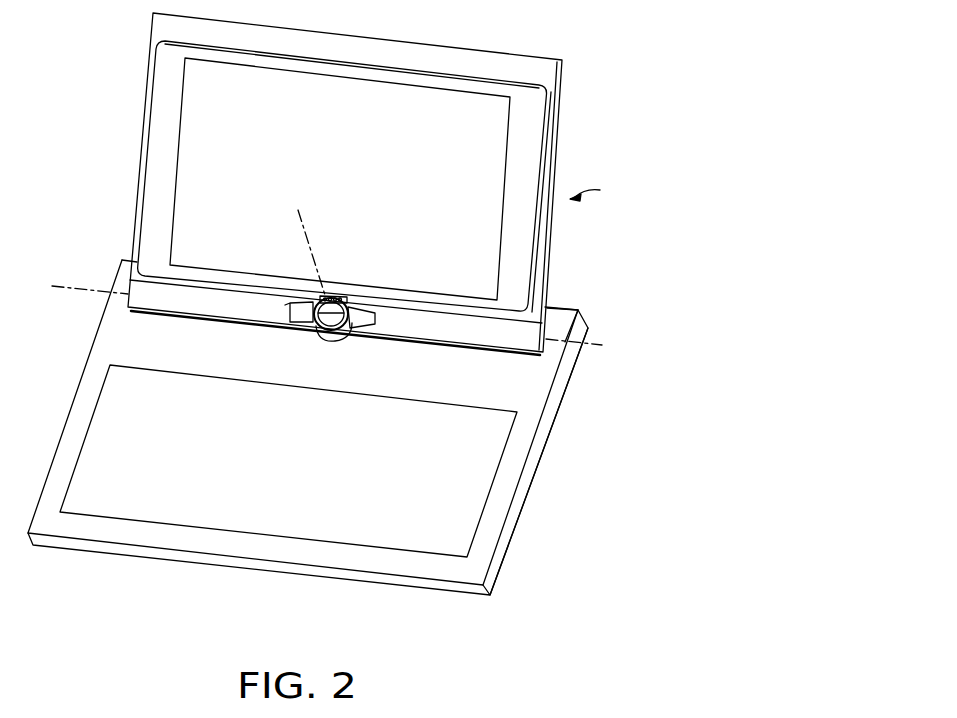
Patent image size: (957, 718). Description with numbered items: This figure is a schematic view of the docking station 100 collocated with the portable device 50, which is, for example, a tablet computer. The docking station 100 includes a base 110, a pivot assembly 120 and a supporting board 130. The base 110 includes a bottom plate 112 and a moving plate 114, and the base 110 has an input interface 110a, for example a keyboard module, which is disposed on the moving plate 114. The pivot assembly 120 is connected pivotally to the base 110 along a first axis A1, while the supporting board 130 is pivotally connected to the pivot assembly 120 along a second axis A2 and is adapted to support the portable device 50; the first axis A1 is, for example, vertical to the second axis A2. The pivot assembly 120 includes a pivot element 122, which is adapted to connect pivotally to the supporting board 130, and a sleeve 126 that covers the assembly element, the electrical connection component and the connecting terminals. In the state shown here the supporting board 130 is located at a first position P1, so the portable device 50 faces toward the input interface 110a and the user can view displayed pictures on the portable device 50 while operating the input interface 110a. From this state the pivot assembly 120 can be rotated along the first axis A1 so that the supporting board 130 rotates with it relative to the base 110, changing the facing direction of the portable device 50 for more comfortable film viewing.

The docking station 100 is at (622, 636).
The base 110 is at (336, 427).
The input interface 110a is at (457, 538).
The bottom plate 112 is at (585, 337).
The moving plate 114 is at (560, 317).
The pivot assembly 120 is at (331, 309).
The pivot element 122 is at (317, 295).
The sleeve 126 is at (322, 338).
The supporting board 130 is at (543, 72).
The portable device 50 is at (528, 137).
The first axis A1 is at (303, 222).
The second axis A2 is at (602, 345).
The first position P1 is at (600, 195).